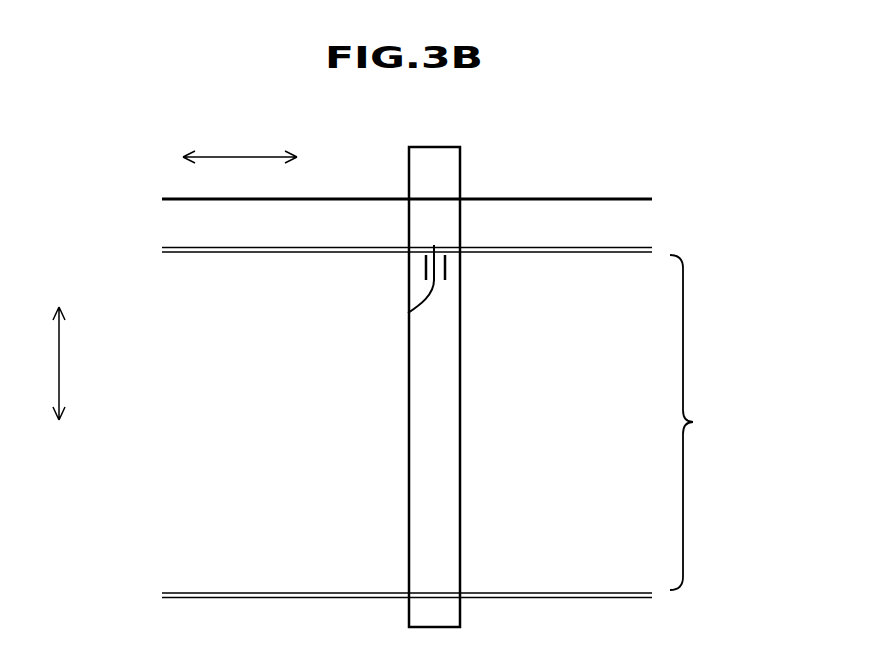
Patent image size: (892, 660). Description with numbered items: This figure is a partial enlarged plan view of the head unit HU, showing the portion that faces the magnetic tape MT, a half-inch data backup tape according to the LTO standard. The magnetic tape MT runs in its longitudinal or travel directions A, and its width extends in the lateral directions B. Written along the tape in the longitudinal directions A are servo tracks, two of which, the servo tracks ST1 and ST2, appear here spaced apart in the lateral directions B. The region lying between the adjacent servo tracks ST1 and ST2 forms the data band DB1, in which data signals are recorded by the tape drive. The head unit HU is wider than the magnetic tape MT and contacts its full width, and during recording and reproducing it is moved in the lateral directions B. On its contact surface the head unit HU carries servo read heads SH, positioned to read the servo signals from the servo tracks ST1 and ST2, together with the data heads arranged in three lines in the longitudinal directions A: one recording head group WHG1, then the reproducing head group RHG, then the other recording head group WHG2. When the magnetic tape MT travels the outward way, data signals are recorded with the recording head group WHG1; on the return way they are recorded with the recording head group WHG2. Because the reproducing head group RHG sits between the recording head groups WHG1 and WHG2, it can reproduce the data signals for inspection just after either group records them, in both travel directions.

The longitudinal directions A is at (240, 145).
The lateral directions B is at (47, 363).
The magnetic tape MT is at (627, 165).
The head unit HU is at (478, 171).
The servo track ST1 is at (373, 252).
The servo track ST2 is at (373, 596).
The servo read head SH is at (434, 245).
The reproducing head group RHG is at (408, 313).
The recording head group WHG1 is at (426, 273).
The recording head group WHG2 is at (448, 265).
The data band DB1 is at (710, 422).